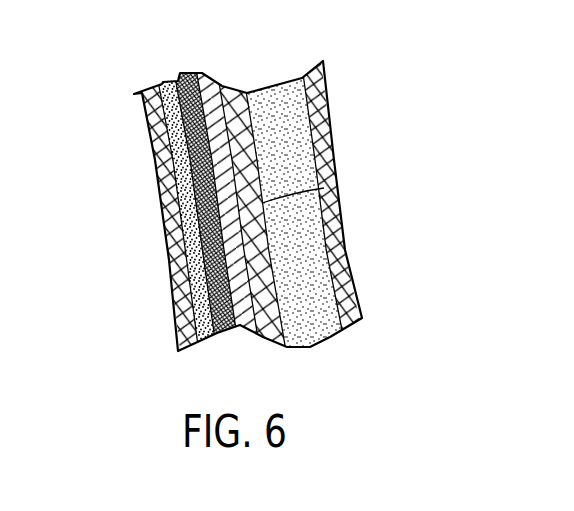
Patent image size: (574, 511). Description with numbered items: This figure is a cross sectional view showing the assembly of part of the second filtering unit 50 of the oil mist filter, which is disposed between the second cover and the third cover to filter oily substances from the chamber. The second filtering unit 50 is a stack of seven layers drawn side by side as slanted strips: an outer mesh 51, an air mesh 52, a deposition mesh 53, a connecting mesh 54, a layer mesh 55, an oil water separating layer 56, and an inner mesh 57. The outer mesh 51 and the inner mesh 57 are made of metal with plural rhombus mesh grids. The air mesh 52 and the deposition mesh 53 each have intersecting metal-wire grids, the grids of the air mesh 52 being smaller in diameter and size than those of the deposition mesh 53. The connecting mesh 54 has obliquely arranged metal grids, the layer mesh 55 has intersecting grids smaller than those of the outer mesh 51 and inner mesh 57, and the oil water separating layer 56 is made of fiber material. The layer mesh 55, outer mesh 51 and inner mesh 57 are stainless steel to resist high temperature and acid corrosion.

The second filtering unit 50 is at (350, 123).
The outer mesh 51 is at (158, 163).
The air mesh 52 is at (165, 202).
The deposition mesh 53 is at (170, 231).
The connecting mesh 54 is at (171, 277).
The layer mesh 55 is at (338, 188).
The oil water separating layer 56 is at (337, 232).
The inner mesh 57 is at (337, 273).